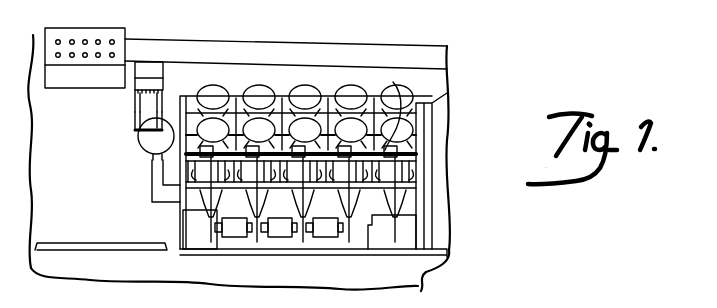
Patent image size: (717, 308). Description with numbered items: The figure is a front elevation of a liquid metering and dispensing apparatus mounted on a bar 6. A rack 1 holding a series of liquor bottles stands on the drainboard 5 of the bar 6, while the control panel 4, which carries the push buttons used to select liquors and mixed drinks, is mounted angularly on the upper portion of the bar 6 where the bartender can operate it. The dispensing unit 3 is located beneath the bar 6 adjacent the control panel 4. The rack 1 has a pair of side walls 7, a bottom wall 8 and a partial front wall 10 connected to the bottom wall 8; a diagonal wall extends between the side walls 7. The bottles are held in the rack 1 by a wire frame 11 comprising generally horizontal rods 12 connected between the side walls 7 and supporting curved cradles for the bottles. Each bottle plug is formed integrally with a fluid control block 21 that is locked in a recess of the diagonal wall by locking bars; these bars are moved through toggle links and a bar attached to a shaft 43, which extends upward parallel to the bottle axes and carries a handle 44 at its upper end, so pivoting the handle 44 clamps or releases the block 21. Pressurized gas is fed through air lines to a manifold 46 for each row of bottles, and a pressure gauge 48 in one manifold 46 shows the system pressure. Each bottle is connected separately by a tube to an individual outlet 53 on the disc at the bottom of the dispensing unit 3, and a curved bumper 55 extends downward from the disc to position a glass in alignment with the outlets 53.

The rack 1 is at (437, 102).
The dispensing unit 3 is at (150, 80).
The control panel 4 is at (85, 82).
The drainboard 5 is at (55, 247).
The bar 6 is at (32, 43).
The side walls 7 is at (177, 230).
The bottom wall 8 is at (435, 177).
The partial front wall 10 is at (388, 238).
The wire frame 11 is at (420, 148).
The horizontal rods 12 is at (262, 93).
The fluid control block 21 is at (293, 238).
The shaft 43 is at (400, 177).
The handle 44 is at (382, 112).
The manifold 46 is at (167, 205).
The pressure gauge 48 is at (143, 147).
The outlets 53 is at (147, 97).
The bumper 55 is at (140, 122).